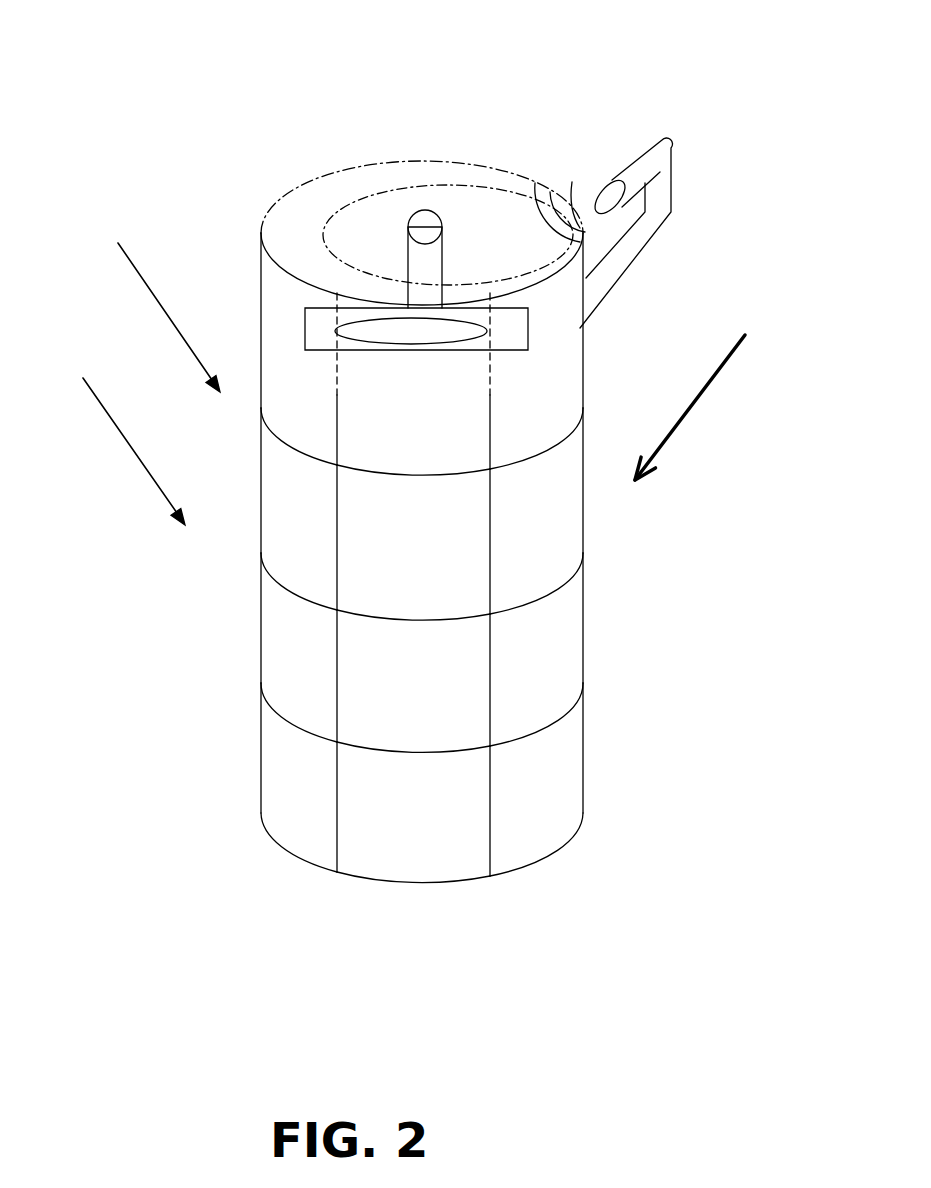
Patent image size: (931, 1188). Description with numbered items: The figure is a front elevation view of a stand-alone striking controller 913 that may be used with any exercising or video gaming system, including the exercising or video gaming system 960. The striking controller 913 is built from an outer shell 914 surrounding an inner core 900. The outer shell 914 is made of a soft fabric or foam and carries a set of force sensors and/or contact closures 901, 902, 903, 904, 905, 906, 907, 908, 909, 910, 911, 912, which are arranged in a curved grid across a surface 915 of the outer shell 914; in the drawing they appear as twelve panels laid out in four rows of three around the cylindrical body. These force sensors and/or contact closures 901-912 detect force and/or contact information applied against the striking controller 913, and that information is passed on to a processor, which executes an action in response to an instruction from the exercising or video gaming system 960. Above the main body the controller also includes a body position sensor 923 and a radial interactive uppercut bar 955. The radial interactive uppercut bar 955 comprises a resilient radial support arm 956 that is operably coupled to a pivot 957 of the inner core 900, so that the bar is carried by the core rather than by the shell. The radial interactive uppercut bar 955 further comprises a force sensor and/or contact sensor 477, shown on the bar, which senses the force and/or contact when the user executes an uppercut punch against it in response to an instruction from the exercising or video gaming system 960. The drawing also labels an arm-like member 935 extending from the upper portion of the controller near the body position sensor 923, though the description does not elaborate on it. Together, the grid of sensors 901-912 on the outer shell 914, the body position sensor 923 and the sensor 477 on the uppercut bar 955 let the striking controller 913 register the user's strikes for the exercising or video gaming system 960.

The inner core 900 is at (375, 208).
The outer shell 914 is at (307, 212).
The resilient radial support arm 956 is at (423, 263).
The pivot 957 is at (428, 223).
The radial interactive uppercut bar 955 is at (513, 323).
The force sensor and/or contact sensor 477 is at (400, 327).
The handle arm 935 is at (643, 235).
The body position sensor 923 is at (640, 170).
The force sensor and/or contact closure 901 is at (328, 379).
The force sensor and/or contact closure 902 is at (440, 395).
The force sensor and/or contact closure 903 is at (567, 379).
The force sensor and/or contact closure 904 is at (328, 530).
The force sensor and/or contact closure 905 is at (440, 552).
The force sensor and/or contact closure 906 is at (567, 535).
The force sensor and/or contact closure 907 is at (328, 675).
The force sensor and/or contact closure 908 is at (440, 692).
The force sensor and/or contact closure 909 is at (567, 670).
The force sensor and/or contact closure 910 is at (328, 807).
The force sensor and/or contact closure 911 is at (440, 830).
The force sensor and/or contact closure 912 is at (565, 809).
The surface 915 is at (146, 290).
The striking controller 913 is at (111, 424).
The exercising or video gaming system 960 is at (724, 389).